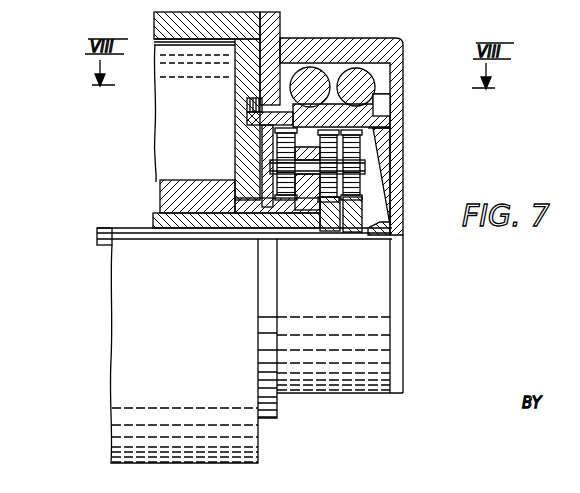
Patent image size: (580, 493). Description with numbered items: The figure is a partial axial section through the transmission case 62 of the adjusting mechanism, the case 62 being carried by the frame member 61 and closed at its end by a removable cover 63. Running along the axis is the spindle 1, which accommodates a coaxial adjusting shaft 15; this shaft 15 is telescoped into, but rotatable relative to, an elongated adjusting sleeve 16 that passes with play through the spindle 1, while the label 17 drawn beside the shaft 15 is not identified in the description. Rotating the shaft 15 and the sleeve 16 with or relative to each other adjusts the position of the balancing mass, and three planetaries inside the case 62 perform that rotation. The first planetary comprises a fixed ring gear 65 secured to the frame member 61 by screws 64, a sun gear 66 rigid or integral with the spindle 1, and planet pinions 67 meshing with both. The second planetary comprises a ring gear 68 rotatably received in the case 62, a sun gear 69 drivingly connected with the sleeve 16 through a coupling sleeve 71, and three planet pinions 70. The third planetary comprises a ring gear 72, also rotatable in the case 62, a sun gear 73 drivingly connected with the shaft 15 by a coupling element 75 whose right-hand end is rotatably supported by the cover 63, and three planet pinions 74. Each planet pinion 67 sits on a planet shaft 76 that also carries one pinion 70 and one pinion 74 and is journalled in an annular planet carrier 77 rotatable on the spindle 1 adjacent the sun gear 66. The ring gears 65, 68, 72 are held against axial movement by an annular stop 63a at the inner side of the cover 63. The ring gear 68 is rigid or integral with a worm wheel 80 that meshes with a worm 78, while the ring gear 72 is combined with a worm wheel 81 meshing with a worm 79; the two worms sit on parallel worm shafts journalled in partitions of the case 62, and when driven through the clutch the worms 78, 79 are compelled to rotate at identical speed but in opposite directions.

The spindle 1 is at (163, 224).
The adjusting shaft 15 is at (98, 239).
The adjusting sleeve 16 is at (147, 227).
The shaft end 17 is at (104, 236).
The frame member 61 is at (157, 20).
The transmission case 62 is at (279, 27).
The removable cover 63 is at (403, 65).
The annular stop 63a is at (393, 133).
The screws 64 is at (240, 111).
The fixed ring gear 65 is at (283, 127).
The sun gear 66 is at (262, 207).
The planet pinions 67 is at (283, 152).
The ring gear 68 is at (295, 164).
The sun gear 69 is at (327, 212).
The planet pinions 70 is at (362, 190).
The coupling sleeve 71 is at (242, 232).
The ring gear 72 is at (390, 122).
The sun gear 73 is at (352, 232).
The planet pinions 74 is at (357, 155).
The coupling element 75 is at (373, 237).
The planet shaft 76 is at (353, 185).
The planet carrier 77 is at (302, 210).
The worm 78 is at (310, 77).
The worm 79 is at (370, 48).
The worm wheel 80 is at (247, 100).
The worm wheel 81 is at (370, 115).